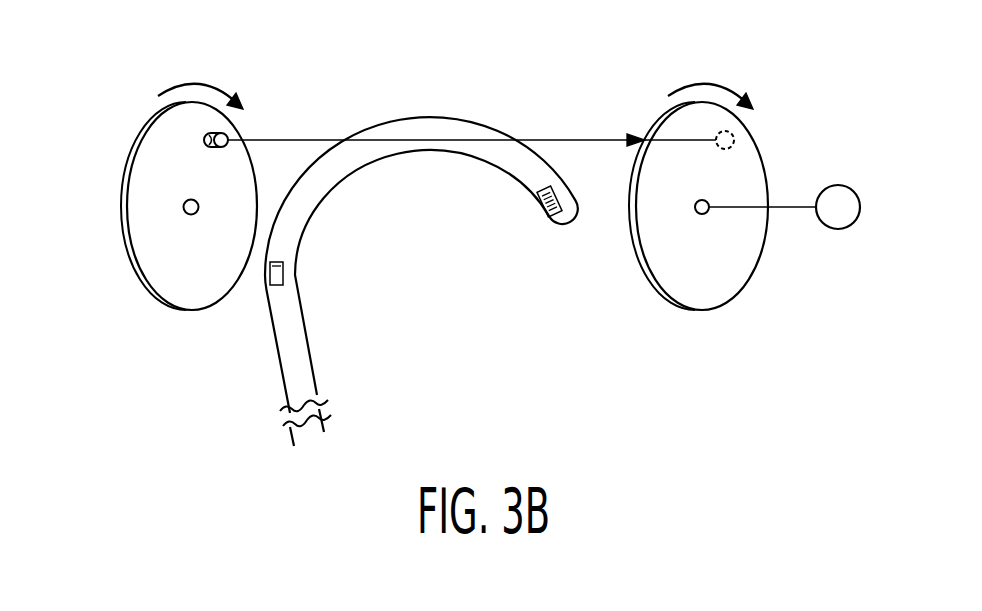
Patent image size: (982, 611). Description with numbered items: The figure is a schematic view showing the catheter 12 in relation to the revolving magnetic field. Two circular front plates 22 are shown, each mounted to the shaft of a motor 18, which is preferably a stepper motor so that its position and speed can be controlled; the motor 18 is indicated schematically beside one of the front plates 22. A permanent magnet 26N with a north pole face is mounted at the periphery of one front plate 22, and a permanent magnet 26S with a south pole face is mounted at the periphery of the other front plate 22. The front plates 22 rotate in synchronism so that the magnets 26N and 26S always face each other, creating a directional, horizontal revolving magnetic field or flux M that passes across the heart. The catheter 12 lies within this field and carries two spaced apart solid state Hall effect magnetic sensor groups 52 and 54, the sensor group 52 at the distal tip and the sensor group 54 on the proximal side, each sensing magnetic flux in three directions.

The catheter 12 is at (368, 120).
The motor 18 is at (838, 185).
The front plate 22 is at (126, 262).
The permanent magnet 26N is at (207, 137).
The permanent magnet 26S is at (725, 130).
The magnetic sensor group 52 is at (540, 216).
The magnetic sensor group 54 is at (277, 289).
The revolving magnetic field M is at (301, 138).